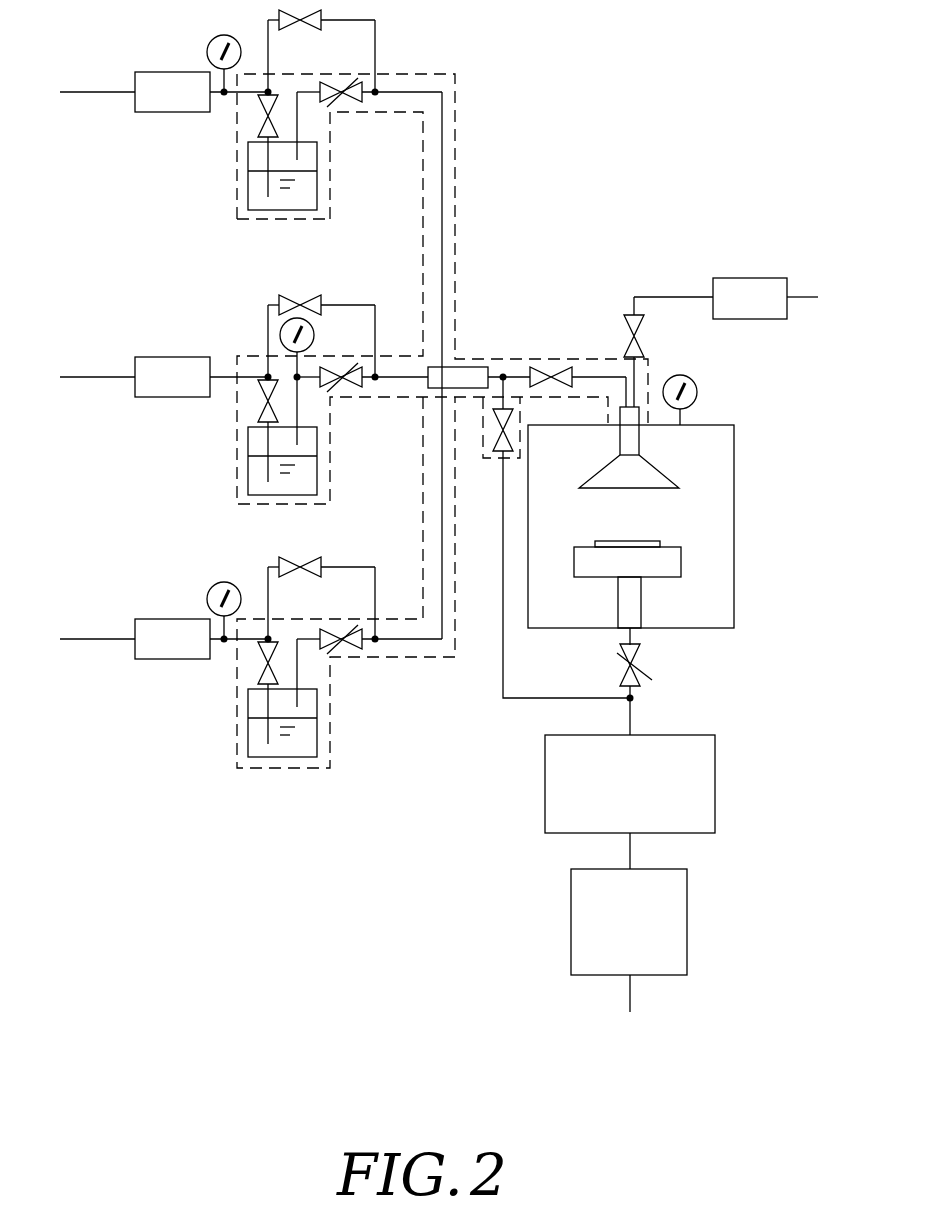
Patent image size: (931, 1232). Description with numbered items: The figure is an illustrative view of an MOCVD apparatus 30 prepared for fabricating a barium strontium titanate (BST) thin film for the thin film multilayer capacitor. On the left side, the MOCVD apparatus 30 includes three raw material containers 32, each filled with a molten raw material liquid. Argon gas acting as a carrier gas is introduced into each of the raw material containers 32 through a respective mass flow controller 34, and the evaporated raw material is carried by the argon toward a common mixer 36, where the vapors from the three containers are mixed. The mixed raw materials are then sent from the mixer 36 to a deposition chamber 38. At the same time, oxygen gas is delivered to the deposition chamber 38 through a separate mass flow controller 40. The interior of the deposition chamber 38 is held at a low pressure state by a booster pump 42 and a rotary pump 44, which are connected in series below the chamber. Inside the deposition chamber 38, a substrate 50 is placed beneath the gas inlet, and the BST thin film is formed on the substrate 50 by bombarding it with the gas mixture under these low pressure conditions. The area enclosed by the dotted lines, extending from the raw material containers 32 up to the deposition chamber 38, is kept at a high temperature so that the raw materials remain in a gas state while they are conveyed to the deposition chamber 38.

The MOCVD apparatus 30 is at (627, 119).
The raw material container 32 is at (247, 187).
The mass flow controller 34 is at (165, 72).
The mixer 36 is at (470, 367).
The deposition chamber 38 is at (734, 493).
The mass flow controller 40 is at (735, 278).
The booster pump 42 is at (715, 788).
The rotary pump 44 is at (687, 922).
The substrate 50 is at (640, 541).